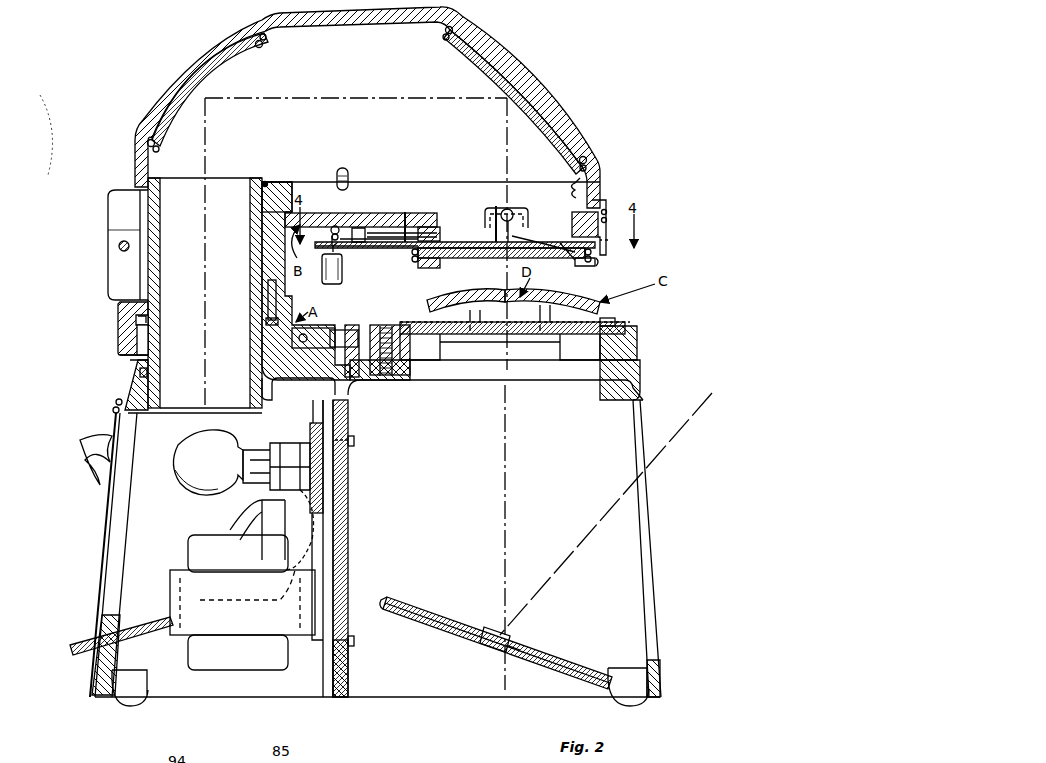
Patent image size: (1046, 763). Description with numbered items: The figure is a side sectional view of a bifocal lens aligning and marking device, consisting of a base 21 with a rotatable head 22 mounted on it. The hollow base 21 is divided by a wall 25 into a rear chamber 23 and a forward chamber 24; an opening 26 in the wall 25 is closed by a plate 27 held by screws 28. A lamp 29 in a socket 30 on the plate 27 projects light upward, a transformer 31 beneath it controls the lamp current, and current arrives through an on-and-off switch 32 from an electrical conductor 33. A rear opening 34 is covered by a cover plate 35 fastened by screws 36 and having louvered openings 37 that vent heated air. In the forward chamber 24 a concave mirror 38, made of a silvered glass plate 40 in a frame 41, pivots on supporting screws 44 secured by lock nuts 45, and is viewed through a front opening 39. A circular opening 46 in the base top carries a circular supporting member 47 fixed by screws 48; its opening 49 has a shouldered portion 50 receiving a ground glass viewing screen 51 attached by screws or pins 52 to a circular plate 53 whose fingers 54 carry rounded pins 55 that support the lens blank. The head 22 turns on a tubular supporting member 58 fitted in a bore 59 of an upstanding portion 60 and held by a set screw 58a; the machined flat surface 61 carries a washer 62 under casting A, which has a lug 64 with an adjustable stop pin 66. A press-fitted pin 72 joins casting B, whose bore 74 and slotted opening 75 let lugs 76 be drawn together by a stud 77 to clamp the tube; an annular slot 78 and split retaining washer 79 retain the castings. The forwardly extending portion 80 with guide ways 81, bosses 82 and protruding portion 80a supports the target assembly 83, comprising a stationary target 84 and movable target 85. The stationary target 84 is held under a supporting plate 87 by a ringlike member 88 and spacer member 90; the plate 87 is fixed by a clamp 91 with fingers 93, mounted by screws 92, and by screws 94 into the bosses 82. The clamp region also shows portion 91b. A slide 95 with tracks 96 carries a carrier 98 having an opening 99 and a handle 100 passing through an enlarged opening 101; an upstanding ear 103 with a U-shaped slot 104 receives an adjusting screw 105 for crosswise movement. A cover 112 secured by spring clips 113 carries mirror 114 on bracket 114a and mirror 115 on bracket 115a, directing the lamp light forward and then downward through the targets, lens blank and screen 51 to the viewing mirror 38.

The base 21 is at (383, 703).
The head 22 is at (128, 160).
The chamber 23 is at (138, 545).
The forward chamber 24 is at (632, 612).
The wall 25 is at (350, 680).
The opening 26 is at (350, 518).
The plate 27 is at (348, 555).
The screws 28 is at (356, 440).
The lamp 29 is at (178, 490).
The socket 30 is at (308, 443).
The transformer 31 is at (176, 640).
The on-and-off switch 32 is at (262, 506).
The electrical conductor 33 is at (155, 622).
The opening 34 is at (126, 489).
The cover plate 35 is at (97, 515).
The screws 36 is at (116, 400).
The louvered openings 37 is at (85, 448).
The mirror 38 is at (478, 622).
The opening 39 is at (655, 525).
The circular glass plate 40 is at (432, 603).
The frame 41 is at (384, 600).
The supporting screws 44 is at (512, 658).
The lock nuts 45 is at (512, 636).
The circular opening 46 is at (542, 372).
The circular supporting member 47 is at (630, 342).
The screws 48 is at (384, 328).
The circular opening 49 is at (460, 375).
The shouldered portion 50 is at (418, 343).
The ground glass viewing screen 51 is at (490, 334).
The screws or pins 52 is at (430, 322).
The circular plate 53 is at (615, 322).
The fingers 54 is at (452, 300).
The pins 55 is at (478, 296).
The tubular supporting member 58 is at (180, 412).
The set screw 58a is at (138, 372).
The bore 59 is at (262, 413).
The upstanding portion 60 is at (130, 358).
The flat surface 61 is at (137, 333).
The washer 62 is at (140, 318).
The lug 64 is at (308, 338).
The adjustable stop pin 66 is at (306, 355).
The press-fitted pin 72 is at (279, 296).
The bore 74 is at (293, 212).
The slotted opening 75 is at (140, 216).
The lugs 76 is at (112, 267).
The stud 77 is at (118, 246).
The annular slot 78 is at (264, 182).
The split retaining washer 79 is at (265, 184).
The forwardly extending portion 80 is at (445, 190).
The protruding portion 80a is at (520, 208).
The guide ways 81 is at (445, 228).
The bosses 82 is at (352, 244).
The target assembly 83 is at (598, 262).
The stationary target 84 is at (440, 258).
The movable target 85 is at (470, 242).
The supporting plate 87 is at (560, 243).
The ringlike member 88 is at (470, 259).
The spacer member 90 is at (403, 258).
The clamp 91 is at (603, 215).
The block portion 91b is at (612, 231).
The screws 92 is at (610, 206).
The fingers 93 is at (610, 252).
The screws 94 is at (340, 272).
The slide 95 is at (405, 212).
The tracks 96 is at (426, 227).
The carrier 98 is at (378, 228).
The opening 99 is at (496, 206).
The handle 100 is at (338, 284).
The enlarged opening 101 is at (385, 248).
The upstanding ear 103 is at (500, 210).
The U-shaped slot 104 is at (511, 221).
The adjusting screw 105 is at (520, 240).
The cover 112 is at (520, 68).
The spring clips 113 is at (343, 170).
The mirror 114 is at (235, 66).
The bracket 114a is at (266, 42).
The mirror 115 is at (470, 62).
The bracket 115a is at (443, 36).